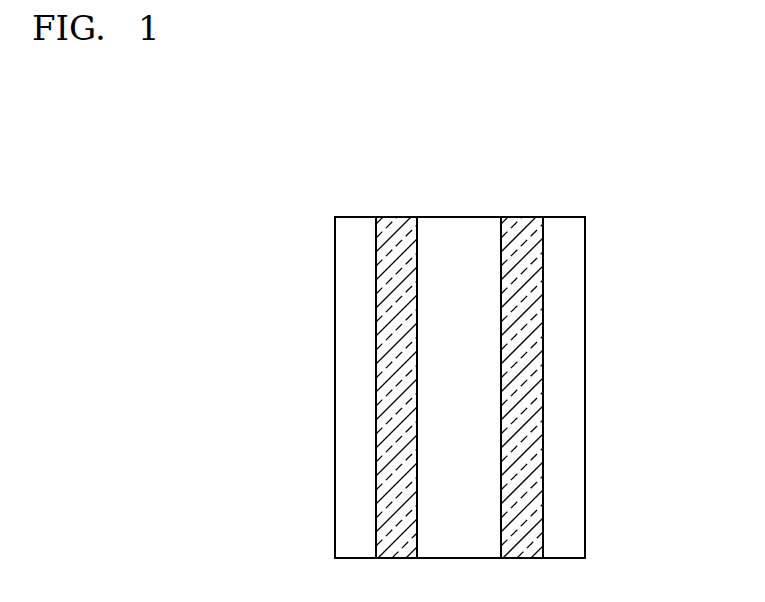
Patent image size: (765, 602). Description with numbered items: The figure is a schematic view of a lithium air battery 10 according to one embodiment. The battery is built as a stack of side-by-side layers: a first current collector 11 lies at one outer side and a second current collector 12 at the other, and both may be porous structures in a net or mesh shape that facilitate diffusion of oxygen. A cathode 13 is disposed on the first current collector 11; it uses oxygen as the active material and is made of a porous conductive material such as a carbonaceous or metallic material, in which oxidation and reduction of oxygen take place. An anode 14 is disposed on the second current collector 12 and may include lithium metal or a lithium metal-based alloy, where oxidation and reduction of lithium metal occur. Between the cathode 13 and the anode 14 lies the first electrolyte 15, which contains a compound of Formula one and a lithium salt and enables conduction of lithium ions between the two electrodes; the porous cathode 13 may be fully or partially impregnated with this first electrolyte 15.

The lithium air battery 10 is at (613, 200).
The first current collector 11 is at (356, 226).
The second current collector 12 is at (564, 226).
The cathode 13 is at (399, 228).
The anode 14 is at (523, 228).
The first electrolyte 15 is at (461, 226).